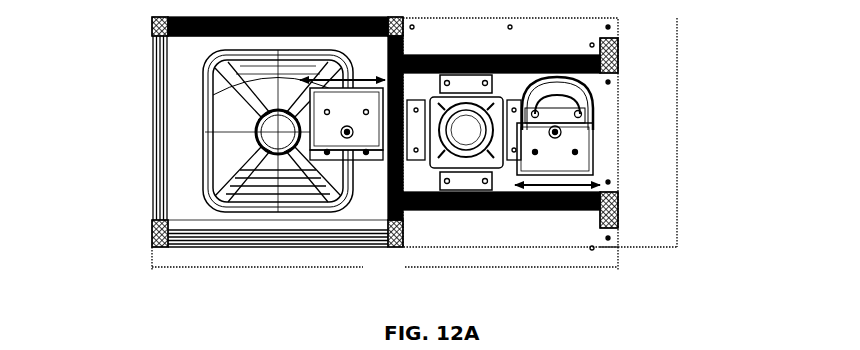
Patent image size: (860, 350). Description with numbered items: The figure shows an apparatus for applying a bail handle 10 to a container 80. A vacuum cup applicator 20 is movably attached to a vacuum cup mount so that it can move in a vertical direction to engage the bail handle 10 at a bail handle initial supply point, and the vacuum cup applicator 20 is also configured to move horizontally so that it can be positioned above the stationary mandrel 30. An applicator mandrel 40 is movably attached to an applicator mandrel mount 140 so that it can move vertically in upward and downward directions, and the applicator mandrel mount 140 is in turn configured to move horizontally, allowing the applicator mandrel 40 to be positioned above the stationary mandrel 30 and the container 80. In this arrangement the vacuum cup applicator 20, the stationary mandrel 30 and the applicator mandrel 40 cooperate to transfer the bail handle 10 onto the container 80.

The bail handle 10 is at (590, 92).
The vacuum cup applicator 20 is at (582, 139).
The stationary mandrel 30 is at (465, 142).
The applicator mandrel 40 is at (333, 108).
The container 80 is at (230, 150).
The applicator mandrel mount 140 is at (418, 182).